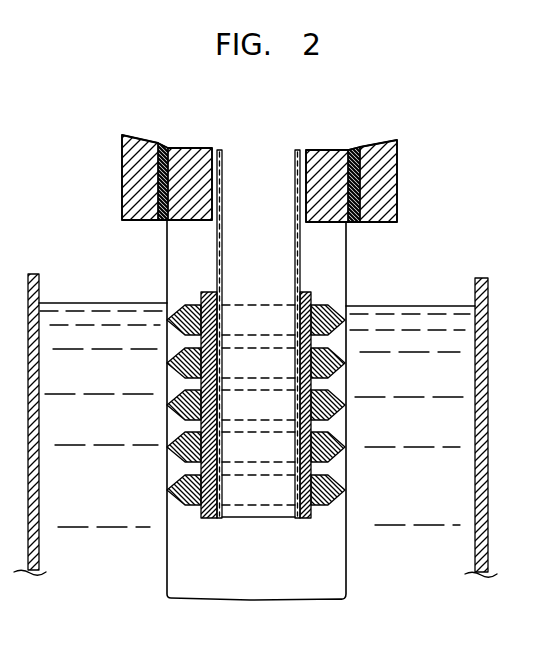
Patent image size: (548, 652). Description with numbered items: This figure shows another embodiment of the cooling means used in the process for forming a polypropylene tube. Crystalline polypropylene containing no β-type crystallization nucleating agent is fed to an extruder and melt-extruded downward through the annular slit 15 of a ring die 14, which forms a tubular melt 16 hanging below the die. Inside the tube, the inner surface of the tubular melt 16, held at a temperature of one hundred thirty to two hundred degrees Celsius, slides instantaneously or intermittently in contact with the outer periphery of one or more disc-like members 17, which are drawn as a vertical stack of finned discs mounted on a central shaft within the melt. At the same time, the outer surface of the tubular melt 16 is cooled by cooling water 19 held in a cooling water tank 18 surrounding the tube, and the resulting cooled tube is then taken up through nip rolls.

The ring die 14 is at (390, 191).
The annular slit 15 is at (358, 206).
The tubular melt 16 is at (347, 290).
The disc-like members 17 is at (197, 308).
The cooling water tank 18 is at (488, 447).
The cooling water 19 is at (466, 337).